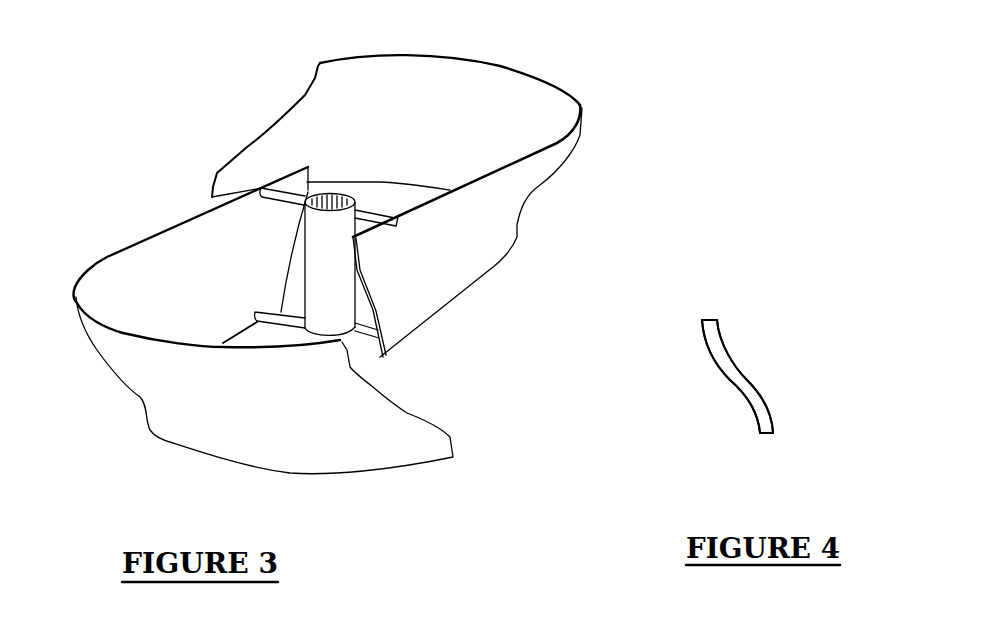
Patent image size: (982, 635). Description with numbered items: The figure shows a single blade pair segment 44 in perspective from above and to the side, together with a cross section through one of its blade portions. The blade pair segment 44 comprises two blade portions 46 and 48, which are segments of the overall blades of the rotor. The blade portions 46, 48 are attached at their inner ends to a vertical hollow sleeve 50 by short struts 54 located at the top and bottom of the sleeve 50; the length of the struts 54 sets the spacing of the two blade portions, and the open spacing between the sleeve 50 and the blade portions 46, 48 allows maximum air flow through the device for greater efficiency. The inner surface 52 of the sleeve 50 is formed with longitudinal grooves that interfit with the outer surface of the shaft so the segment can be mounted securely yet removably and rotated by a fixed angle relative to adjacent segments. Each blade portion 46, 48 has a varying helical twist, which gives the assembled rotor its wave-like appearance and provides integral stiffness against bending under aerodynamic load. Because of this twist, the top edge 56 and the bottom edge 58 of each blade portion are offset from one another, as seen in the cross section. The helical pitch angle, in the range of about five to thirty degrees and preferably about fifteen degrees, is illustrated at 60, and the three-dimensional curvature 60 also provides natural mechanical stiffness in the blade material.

In FIG. 3, the blade pair segment 44 is at (578, 262).
In FIG. 3, the blade portion 46 is at (147, 420).
In FIG. 4, the blade portion 46 is at (743, 370).
In FIG. 3, the blade portion 48 is at (492, 60).
In FIG. 4, the blade portion 48 is at (737, 376).
In FIG. 3, the vertical hollow sleeve 50 is at (340, 305).
In FIG. 3, the inner surface 52 is at (333, 195).
In FIG. 3, the short struts 54 is at (367, 210).
In FIG. 3, the top edge 56 is at (583, 104).
In FIG. 4, the top edge 56 is at (708, 320).
In FIG. 3, the bottom edge 58 is at (480, 283).
In FIG. 4, the bottom edge 58 is at (768, 437).
In FIG. 3, the three-dimensional curvature 60 is at (578, 198).
In FIG. 4, the three-dimensional curvature 60 is at (705, 410).